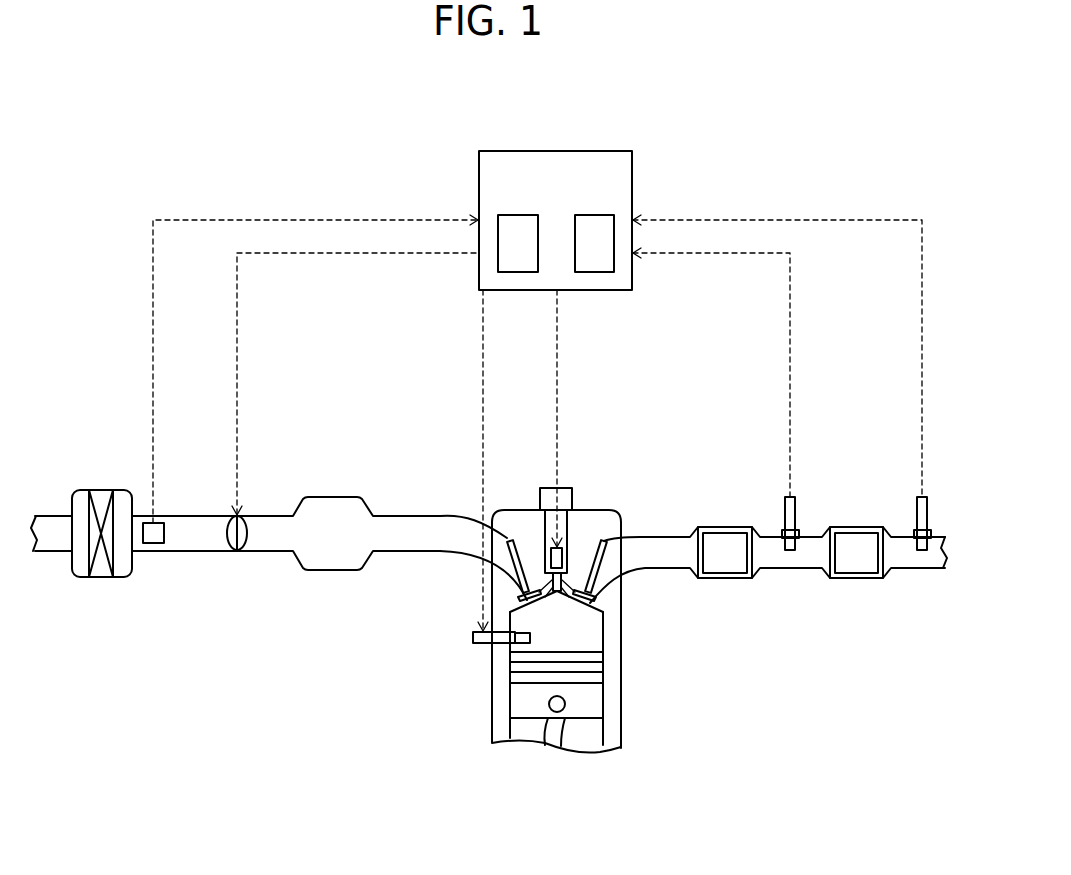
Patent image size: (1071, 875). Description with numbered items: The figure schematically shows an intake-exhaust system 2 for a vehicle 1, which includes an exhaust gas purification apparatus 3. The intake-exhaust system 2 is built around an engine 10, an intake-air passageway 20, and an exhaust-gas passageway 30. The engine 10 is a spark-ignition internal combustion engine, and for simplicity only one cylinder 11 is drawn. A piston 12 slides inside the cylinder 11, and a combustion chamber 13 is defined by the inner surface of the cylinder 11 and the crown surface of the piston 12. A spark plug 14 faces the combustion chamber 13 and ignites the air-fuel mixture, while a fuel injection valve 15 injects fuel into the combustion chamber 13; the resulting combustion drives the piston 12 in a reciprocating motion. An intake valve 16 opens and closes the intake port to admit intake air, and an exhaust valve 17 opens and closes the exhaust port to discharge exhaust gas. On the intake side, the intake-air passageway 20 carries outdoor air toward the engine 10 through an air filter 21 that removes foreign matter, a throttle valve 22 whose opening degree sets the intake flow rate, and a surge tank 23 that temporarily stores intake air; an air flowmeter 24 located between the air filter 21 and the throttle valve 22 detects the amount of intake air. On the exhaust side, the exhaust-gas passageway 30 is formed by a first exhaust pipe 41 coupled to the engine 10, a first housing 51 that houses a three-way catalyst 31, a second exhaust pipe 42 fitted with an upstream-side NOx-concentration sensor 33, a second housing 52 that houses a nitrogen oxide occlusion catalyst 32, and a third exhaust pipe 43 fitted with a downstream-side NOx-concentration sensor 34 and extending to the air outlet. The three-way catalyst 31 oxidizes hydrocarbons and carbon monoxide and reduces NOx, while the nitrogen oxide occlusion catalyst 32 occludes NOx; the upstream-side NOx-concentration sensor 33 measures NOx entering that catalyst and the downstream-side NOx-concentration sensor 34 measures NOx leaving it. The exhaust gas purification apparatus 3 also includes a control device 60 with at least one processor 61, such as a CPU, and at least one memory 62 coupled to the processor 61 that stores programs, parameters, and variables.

The vehicle 1 is at (85, 118).
The intake-exhaust system 2 is at (132, 197).
The exhaust gas purification apparatus 3 is at (818, 648).
The engine 10 is at (565, 440).
The cylinder 11 is at (622, 677).
The piston 12 is at (587, 705).
The combustion chamber 13 is at (583, 640).
The spark plug 14 is at (568, 552).
The fuel injection valve 15 is at (481, 648).
The intake valve 16 is at (518, 540).
The exhaust valve 17 is at (612, 538).
The intake-air passageway 20 is at (52, 512).
The air filter 21 is at (102, 578).
The throttle valve 22 is at (243, 546).
The surge tank 23 is at (335, 571).
The air flowmeter 24 is at (153, 544).
The exhaust-gas passageway 30 is at (672, 537).
The three-way catalyst 31 is at (722, 533).
The nitrogen oxide occlusion catalyst 32 is at (855, 533).
The upstream-side NOx-concentration sensor 33 is at (787, 495).
The downstream-side NOx-concentration sensor 34 is at (918, 495).
The first exhaust pipe 41 is at (677, 569).
The second exhaust pipe 42 is at (792, 569).
The third exhaust pipe 43 is at (920, 569).
The first housing 51 is at (727, 579).
The second housing 52 is at (858, 579).
The control device 60 is at (603, 150).
The processor 61 is at (515, 215).
The memory 62 is at (592, 215).